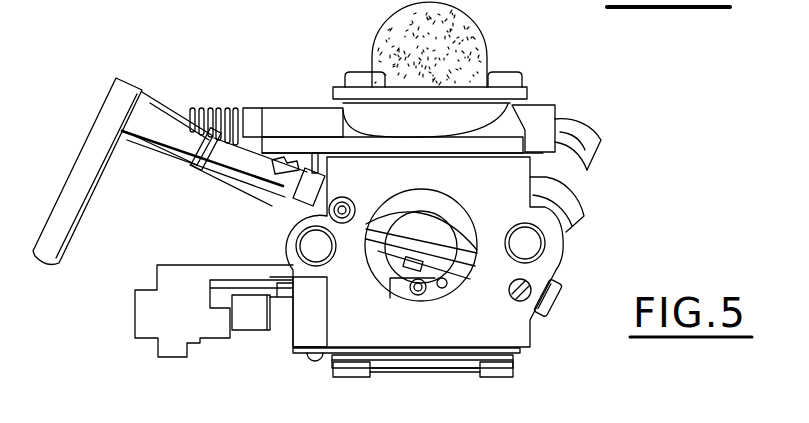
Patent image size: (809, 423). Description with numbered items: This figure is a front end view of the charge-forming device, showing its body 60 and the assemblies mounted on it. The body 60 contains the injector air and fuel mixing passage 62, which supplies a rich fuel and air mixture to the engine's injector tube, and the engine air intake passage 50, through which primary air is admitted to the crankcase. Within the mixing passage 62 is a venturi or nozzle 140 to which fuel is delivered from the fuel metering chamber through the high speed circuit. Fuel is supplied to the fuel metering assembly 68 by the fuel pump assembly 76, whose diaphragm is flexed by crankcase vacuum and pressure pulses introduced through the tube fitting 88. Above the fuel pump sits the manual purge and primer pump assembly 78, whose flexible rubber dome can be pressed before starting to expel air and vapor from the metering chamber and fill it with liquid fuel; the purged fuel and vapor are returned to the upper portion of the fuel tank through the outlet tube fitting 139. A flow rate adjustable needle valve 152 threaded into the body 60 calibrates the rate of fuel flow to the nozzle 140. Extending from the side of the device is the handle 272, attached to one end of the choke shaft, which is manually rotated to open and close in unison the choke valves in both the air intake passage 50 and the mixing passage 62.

The handle 272 is at (90, 131).
The fuel pump assembly 76 is at (366, 110).
The manual purge and primer pump assembly 78 is at (484, 28).
The outlet tube fitting 139 is at (582, 131).
The tube fitting 88 is at (566, 197).
The body 60 is at (560, 260).
The injector air and fuel mixing passage 62 is at (333, 203).
The venturi or nozzle 140 is at (360, 206).
The intake passage 50 is at (377, 265).
The flow rate adjustable needle valve 152 is at (278, 325).
The fuel metering assembly 68 is at (522, 357).